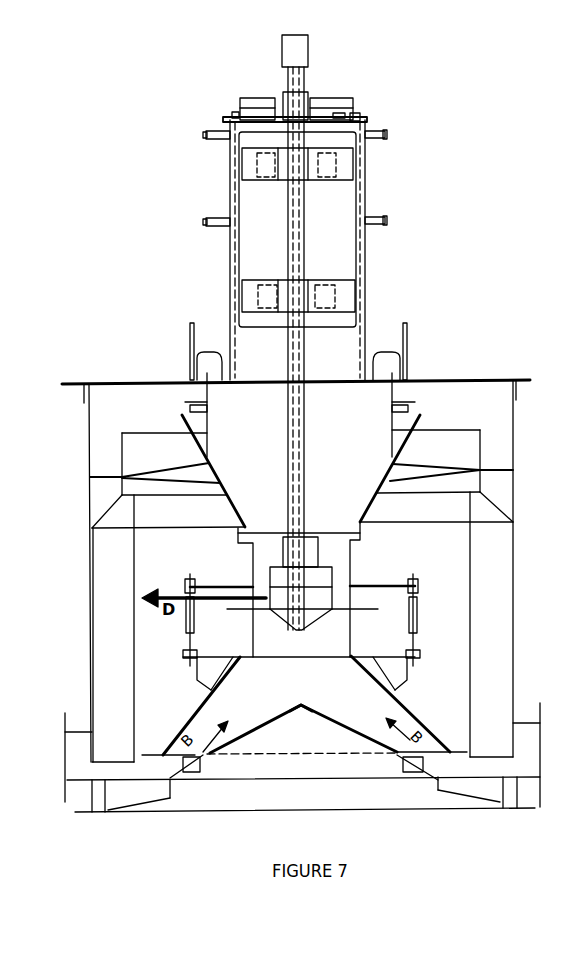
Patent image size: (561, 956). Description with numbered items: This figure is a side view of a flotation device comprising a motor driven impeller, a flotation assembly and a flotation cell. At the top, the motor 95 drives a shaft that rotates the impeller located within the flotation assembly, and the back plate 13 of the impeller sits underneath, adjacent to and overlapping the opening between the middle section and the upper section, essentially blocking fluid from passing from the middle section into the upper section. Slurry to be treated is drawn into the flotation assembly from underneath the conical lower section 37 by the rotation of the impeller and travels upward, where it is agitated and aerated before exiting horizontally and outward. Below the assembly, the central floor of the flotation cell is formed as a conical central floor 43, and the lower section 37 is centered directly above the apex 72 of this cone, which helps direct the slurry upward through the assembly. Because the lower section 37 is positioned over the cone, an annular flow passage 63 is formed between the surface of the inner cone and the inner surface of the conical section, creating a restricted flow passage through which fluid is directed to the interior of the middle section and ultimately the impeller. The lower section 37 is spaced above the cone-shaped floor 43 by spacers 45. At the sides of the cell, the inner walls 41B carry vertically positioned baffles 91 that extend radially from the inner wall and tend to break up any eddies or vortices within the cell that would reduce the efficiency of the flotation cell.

The motor 95 is at (365, 173).
The back plate 13 is at (380, 588).
The inner walls 41B is at (90, 557).
The baffles 91 is at (120, 657).
The annular flow passage 63 is at (240, 698).
The apex 72 is at (300, 704).
The lower section 37 is at (400, 700).
The conical central floor 43 is at (258, 729).
The spacers 45 is at (432, 758).